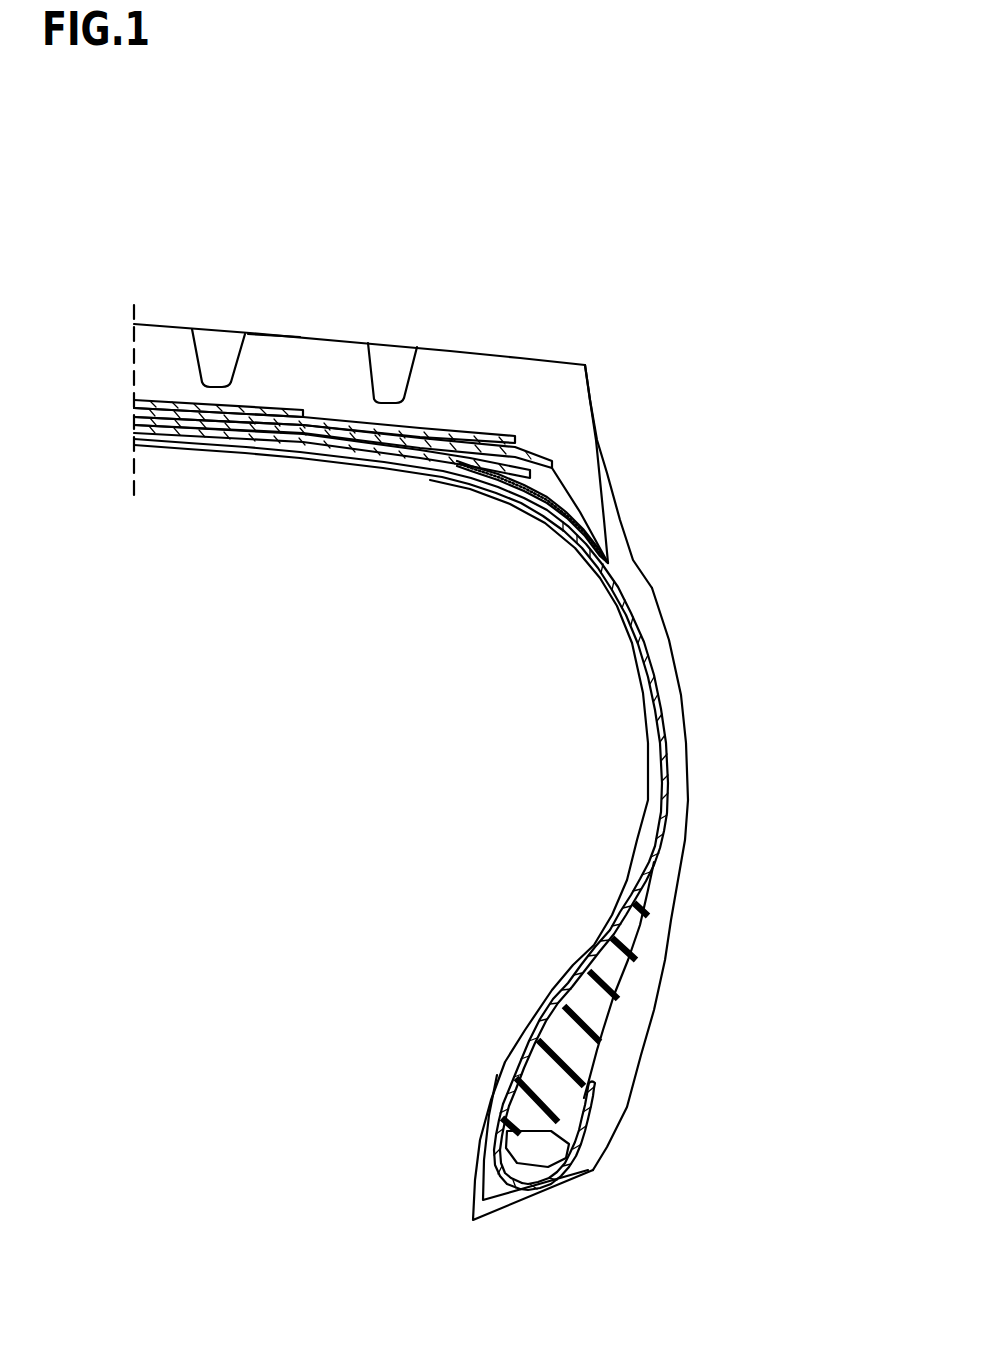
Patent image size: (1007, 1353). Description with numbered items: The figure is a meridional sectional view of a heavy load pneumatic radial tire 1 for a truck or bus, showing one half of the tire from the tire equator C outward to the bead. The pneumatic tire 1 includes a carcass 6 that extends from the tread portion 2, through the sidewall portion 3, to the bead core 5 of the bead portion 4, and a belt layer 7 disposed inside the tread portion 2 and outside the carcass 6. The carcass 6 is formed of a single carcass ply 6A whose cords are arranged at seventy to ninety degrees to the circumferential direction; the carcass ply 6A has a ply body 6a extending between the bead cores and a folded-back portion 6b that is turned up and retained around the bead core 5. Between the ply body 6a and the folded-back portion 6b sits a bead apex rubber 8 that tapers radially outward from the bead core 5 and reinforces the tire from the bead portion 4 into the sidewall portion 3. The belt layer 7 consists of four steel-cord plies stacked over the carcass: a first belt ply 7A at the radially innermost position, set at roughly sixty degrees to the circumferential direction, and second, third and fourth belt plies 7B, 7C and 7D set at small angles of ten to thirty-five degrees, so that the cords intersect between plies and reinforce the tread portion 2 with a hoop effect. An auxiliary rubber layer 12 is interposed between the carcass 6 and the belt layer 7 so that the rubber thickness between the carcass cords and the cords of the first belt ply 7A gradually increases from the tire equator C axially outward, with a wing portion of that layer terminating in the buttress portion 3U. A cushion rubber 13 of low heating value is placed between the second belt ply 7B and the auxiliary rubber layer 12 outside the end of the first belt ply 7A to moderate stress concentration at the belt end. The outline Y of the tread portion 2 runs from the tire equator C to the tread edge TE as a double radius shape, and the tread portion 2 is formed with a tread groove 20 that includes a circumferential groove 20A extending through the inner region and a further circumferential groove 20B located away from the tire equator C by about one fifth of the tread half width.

The pneumatic tire 1 is at (713, 540).
The tread portion 2 is at (326, 310).
The sidewall portion 3 is at (716, 763).
The buttress portion 3U is at (639, 509).
The bead portion 4 is at (483, 1033).
The bead core 5 is at (515, 1150).
The carcass 6 is at (470, 814).
The carcass ply 6A is at (714, 1074).
The ply body 6a is at (570, 998).
The folded-back portion 6b is at (595, 1093).
The belt layer 7 is at (50, 353).
The first belt ply 7A is at (133, 427).
The second belt ply 7B is at (133, 416).
The third belt ply 7C is at (133, 409).
The fourth belt ply 7D is at (133, 402).
The bead apex rubber 8 is at (607, 965).
The auxiliary rubber layer 12 is at (500, 470).
The cushion rubber 13 is at (552, 485).
The tread groove 20 is at (328, 317).
The circumferential groove 20A is at (387, 360).
The circumferential groove 20B is at (212, 334).
The tread edge TE is at (587, 365).
The outline of the tread portion Y is at (267, 330).
The tire equator C is at (140, 487).